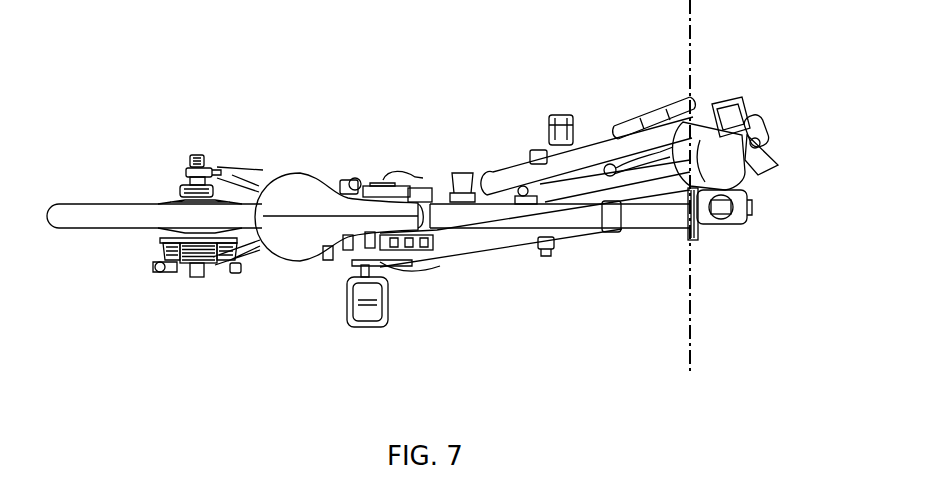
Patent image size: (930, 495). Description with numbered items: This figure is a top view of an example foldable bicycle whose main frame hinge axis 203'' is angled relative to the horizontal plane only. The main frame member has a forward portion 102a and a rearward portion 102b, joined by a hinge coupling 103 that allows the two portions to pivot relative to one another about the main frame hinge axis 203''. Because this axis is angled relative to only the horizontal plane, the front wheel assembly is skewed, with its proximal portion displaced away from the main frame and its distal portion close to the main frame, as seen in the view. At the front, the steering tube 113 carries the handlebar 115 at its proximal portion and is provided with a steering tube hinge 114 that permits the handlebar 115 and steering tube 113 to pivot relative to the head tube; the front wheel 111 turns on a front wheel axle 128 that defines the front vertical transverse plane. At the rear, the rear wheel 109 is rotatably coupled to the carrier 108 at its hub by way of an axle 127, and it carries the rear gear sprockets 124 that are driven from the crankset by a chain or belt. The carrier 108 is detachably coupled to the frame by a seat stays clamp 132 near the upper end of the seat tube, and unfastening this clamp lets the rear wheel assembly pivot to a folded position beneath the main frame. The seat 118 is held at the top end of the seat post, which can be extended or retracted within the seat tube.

The rear wheel 109 is at (88, 228).
The seat 118 is at (283, 173).
The rear gear sprockets 124 is at (180, 270).
The axle 127 is at (200, 277).
The carrier 108 is at (250, 263).
The seat stays clamp 132 is at (393, 177).
The handlebar 115 is at (520, 170).
The main frame hinge axis 203'' is at (630, 186).
The steering tube 113 is at (699, 112).
The steering tube hinge 114 is at (752, 117).
The forward portion 102a is at (737, 177).
The rearward portion 102b is at (495, 227).
The hinge coupling 103 is at (692, 237).
The front wheel axle 128 is at (547, 253).
The front wheel 111 is at (423, 263).